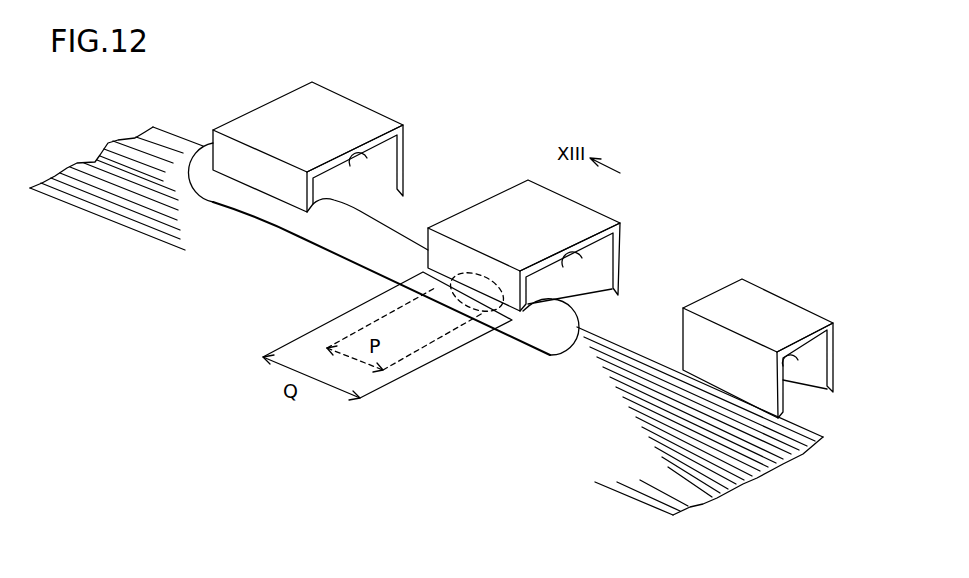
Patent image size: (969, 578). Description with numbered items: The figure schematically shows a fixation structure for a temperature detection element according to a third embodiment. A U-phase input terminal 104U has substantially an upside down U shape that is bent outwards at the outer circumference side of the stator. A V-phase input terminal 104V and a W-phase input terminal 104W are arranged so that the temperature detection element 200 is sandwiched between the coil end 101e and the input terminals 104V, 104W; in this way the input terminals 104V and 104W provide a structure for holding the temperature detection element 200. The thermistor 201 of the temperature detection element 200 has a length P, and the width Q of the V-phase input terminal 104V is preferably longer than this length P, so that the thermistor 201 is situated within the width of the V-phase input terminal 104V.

The W-phase input terminal 104W is at (335, 113).
The V-phase input terminal 104V is at (593, 187).
The U-phase input terminal 104U is at (762, 312).
The temperature detection element 200 is at (393, 263).
The thermistor 201 is at (463, 275).
The coil end 101e is at (672, 490).